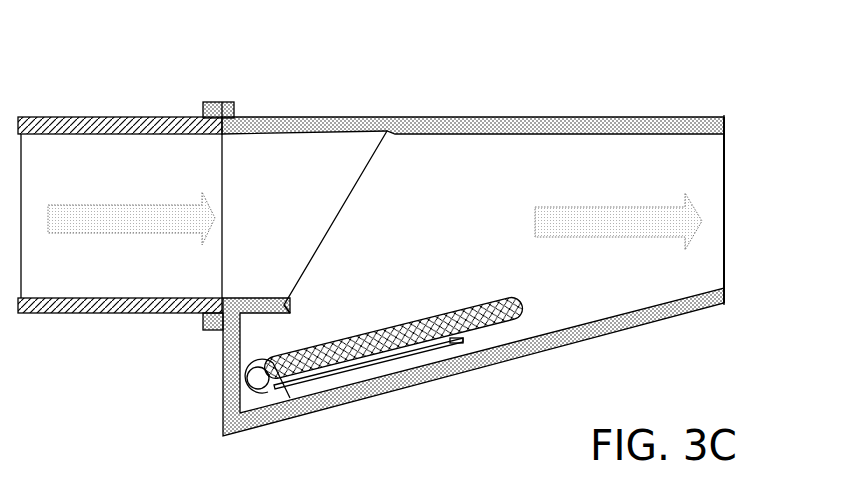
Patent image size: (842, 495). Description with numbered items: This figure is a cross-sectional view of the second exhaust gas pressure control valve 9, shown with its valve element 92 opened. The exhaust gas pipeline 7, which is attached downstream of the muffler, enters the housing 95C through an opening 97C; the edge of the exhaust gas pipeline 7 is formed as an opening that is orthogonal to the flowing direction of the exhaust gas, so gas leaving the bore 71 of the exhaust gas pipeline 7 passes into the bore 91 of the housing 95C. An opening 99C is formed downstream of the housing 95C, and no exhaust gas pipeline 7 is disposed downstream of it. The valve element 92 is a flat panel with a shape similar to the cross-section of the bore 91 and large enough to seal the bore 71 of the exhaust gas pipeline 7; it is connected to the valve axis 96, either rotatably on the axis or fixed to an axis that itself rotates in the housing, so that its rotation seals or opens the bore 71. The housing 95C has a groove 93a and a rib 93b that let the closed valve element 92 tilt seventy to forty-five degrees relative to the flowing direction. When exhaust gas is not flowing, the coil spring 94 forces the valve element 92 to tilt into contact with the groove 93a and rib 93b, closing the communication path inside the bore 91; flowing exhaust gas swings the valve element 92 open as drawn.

The second exhaust gas pressure control valve 9 is at (223, 49).
The exhaust gas pipeline 7 is at (120, 236).
The bore 71 is at (131, 200).
The bore 91 is at (505, 214).
The valve element 92 is at (393, 328).
The groove 93a is at (335, 200).
The rib 93b is at (318, 320).
The coil spring 94 is at (371, 383).
The housing 95C is at (473, 261).
The valve axis 96 is at (220, 391).
The opening 97C is at (189, 219).
The opening 99C is at (765, 215).